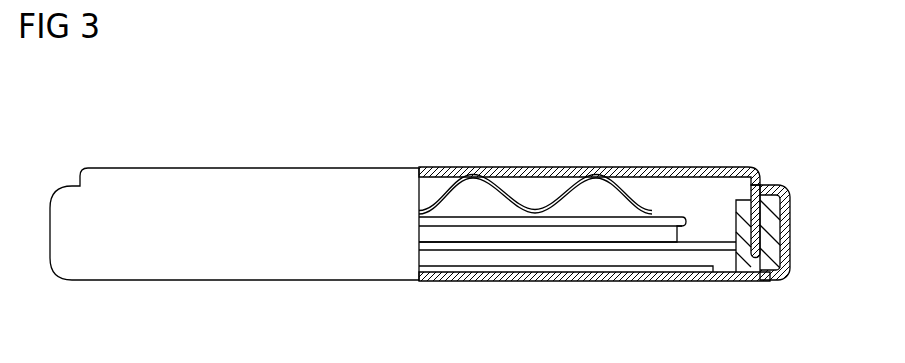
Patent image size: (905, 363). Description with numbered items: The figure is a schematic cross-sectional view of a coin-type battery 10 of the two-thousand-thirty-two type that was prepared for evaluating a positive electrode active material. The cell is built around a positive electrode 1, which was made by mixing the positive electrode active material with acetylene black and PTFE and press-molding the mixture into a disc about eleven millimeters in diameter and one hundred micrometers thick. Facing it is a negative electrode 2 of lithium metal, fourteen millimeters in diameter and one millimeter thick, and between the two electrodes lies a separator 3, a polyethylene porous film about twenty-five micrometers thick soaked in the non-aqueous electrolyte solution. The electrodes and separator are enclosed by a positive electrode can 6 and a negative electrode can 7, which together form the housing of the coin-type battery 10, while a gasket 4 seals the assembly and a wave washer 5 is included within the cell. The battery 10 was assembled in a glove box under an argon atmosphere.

The coin-type battery 10 is at (428, 152).
The positive electrode 1 is at (594, 248).
The positive electrode can 6 is at (519, 281).
The negative electrode 2 is at (687, 231).
The separator 3 is at (705, 240).
The gasket 4 is at (768, 262).
The wave washer 5 is at (632, 198).
The negative electrode can 7 is at (482, 168).